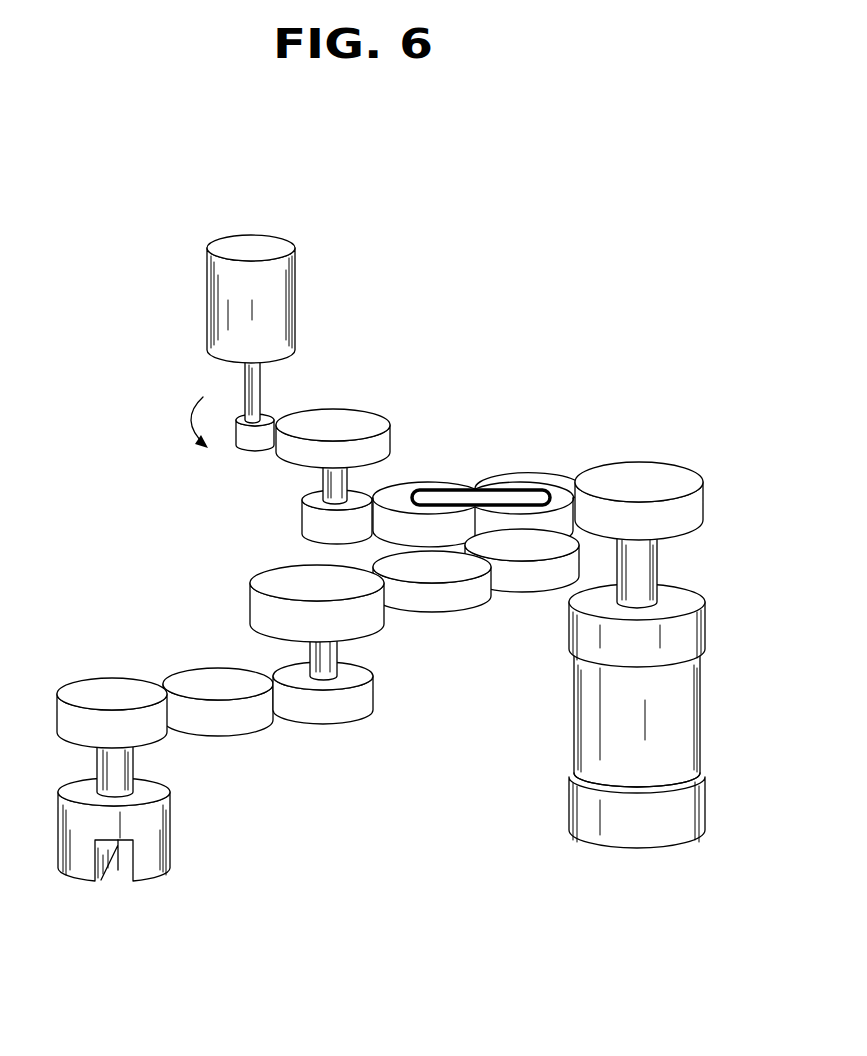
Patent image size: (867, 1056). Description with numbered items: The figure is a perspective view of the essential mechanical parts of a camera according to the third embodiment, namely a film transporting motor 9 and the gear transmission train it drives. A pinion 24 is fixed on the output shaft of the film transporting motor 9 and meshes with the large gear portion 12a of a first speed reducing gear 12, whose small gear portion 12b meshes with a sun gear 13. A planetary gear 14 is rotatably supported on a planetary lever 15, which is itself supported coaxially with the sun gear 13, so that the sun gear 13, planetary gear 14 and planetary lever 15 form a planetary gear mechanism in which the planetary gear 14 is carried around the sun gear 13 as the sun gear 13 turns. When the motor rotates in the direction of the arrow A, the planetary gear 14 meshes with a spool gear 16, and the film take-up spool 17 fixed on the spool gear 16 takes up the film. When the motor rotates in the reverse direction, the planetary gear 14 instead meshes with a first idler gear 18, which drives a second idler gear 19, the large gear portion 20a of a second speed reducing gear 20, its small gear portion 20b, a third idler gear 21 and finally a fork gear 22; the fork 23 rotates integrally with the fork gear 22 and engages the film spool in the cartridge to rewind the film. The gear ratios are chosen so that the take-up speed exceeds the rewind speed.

The film transporting motor 9 is at (286, 310).
The first speed reducing gear 12 is at (364, 404).
The large gear portion 12a is at (347, 418).
The small gear portion 12b is at (305, 523).
The sun gear 13 is at (392, 497).
The planetary gear 14 is at (558, 492).
The planetary lever 15 is at (480, 495).
The spool gear 16 is at (645, 480).
The film take-up spool 17 is at (685, 630).
The first idler gear 18 is at (542, 578).
The second idler gear 19 is at (450, 602).
The second speed reducing gear 20 is at (270, 602).
The large gear portion 20a is at (253, 593).
The small gear portion 20b is at (332, 712).
The third idler gear 21 is at (222, 723).
The fork gear 22 is at (108, 688).
The fork 23 is at (153, 832).
The pinion 24 is at (247, 433).
The arrow A is at (187, 422).